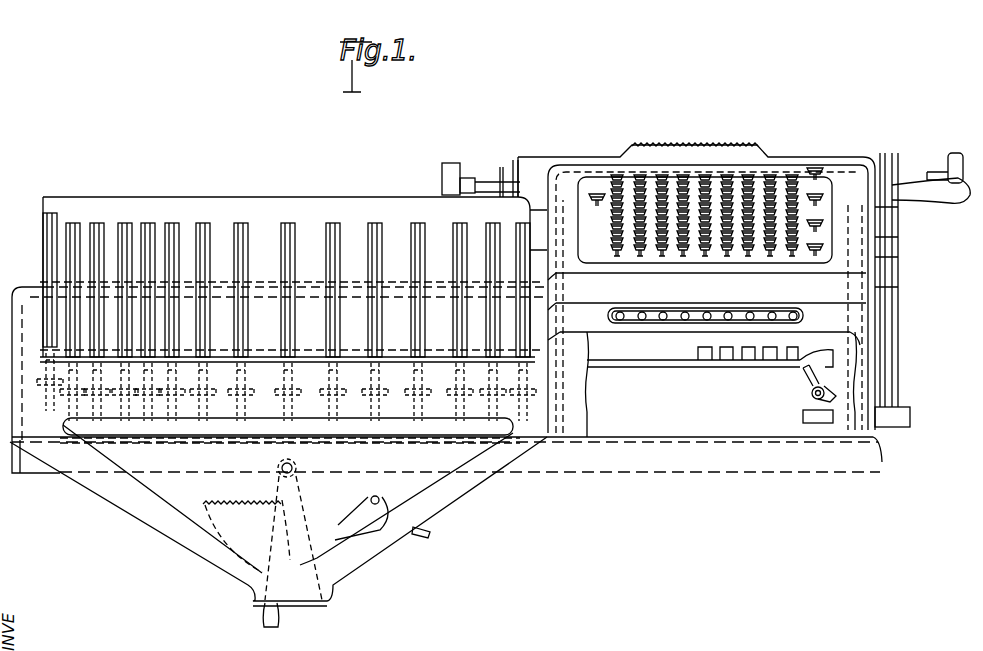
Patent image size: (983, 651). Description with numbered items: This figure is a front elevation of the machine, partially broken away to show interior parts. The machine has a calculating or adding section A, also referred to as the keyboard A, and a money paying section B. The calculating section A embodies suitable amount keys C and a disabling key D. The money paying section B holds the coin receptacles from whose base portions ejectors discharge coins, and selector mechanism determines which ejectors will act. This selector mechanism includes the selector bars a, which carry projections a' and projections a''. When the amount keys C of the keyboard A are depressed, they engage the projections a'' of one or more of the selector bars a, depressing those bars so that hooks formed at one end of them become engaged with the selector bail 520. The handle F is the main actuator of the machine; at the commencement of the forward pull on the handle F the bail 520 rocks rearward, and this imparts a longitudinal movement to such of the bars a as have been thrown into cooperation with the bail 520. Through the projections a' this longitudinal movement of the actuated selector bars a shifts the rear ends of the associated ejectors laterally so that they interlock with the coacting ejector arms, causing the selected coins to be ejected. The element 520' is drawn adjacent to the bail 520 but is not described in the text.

The calculating or adding section A is at (696, 276).
The money paying section B is at (292, 301).
The amount keys C is at (785, 255).
The disabling key D is at (597, 190).
The handle F is at (893, 345).
The selector bars a is at (693, 384).
The projections a' is at (779, 374).
The projections a'' is at (706, 374).
The selector bail 520 is at (797, 389).
The roller bracket 520' is at (795, 421).